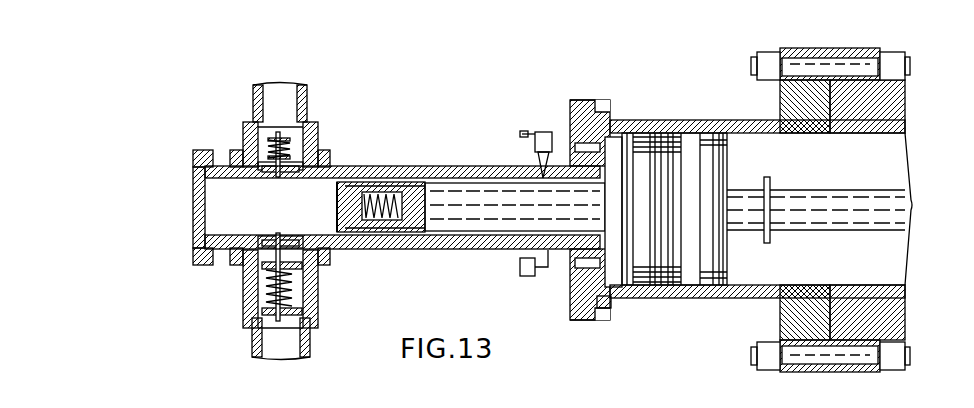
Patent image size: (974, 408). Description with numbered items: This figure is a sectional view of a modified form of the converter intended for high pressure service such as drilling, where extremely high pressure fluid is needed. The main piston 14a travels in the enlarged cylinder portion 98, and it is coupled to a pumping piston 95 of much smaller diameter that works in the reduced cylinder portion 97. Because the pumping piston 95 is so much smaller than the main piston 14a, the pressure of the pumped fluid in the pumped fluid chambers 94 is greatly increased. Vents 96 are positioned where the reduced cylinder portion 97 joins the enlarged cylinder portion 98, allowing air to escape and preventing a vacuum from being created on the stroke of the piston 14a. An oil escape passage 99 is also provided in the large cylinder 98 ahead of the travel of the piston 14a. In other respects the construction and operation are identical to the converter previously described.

The pumped fluid chamber 94 is at (250, 216).
The pumping piston 95 is at (337, 205).
The vent 96 is at (575, 147).
The reduced cylinder portion 97 is at (422, 250).
The enlarged cylinder portion 98 is at (668, 121).
The oil escape passage 99 is at (612, 300).
The main piston 14a is at (763, 209).